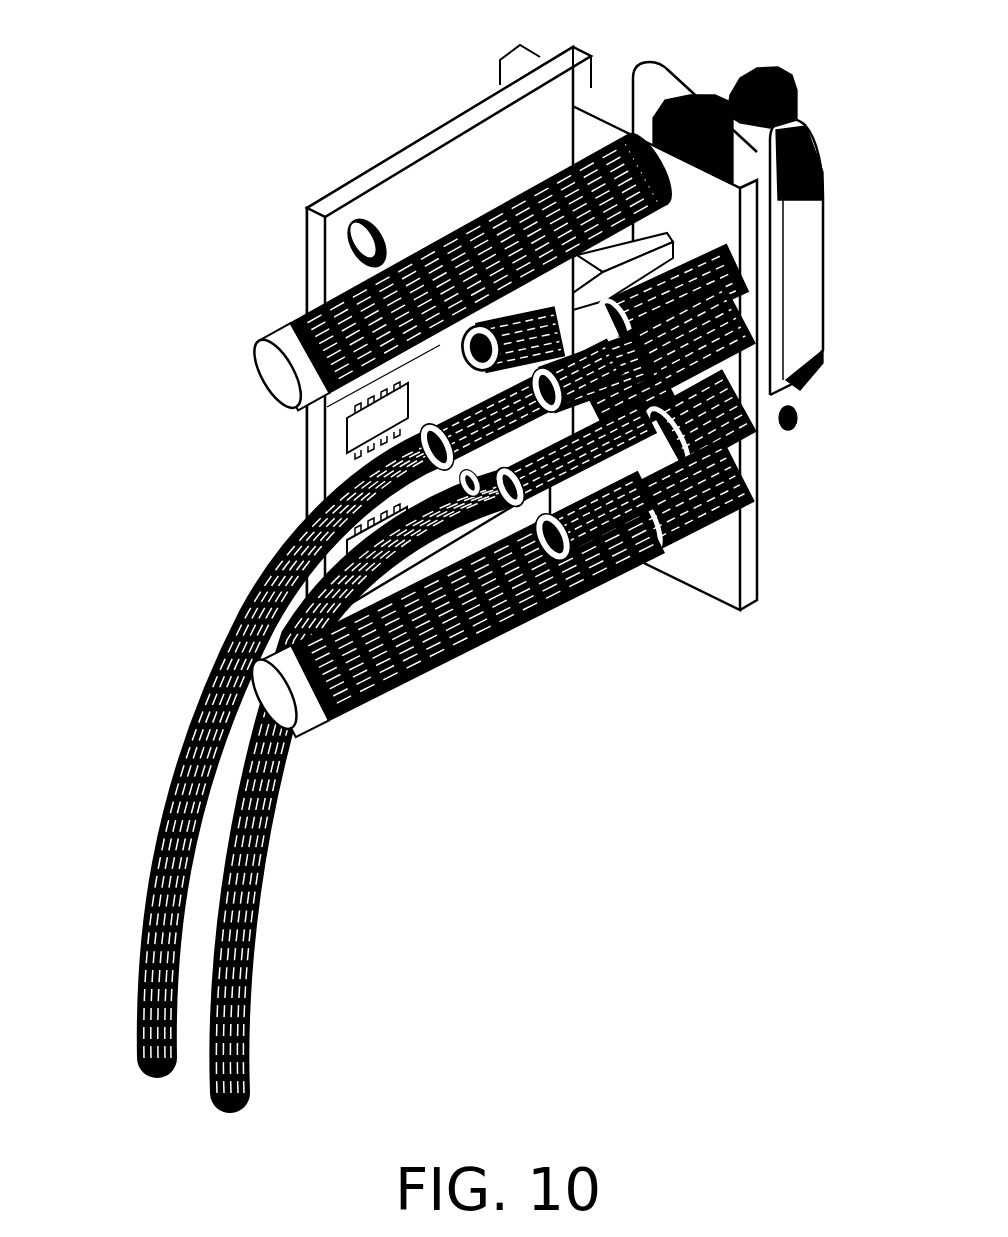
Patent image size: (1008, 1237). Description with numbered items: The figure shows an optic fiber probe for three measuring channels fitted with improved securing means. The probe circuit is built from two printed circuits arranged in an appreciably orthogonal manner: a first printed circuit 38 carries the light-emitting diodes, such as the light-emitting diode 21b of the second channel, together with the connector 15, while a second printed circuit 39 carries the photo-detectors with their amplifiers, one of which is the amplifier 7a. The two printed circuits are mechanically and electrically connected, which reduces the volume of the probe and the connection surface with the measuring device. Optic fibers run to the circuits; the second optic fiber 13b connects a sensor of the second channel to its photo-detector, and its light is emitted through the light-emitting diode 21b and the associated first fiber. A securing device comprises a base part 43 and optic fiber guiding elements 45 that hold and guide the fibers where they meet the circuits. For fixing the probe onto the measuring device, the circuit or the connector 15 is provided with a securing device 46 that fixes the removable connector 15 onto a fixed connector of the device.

The first printed circuit 38 is at (594, 97).
The second printed circuit 39 is at (416, 150).
The securing device 46 is at (320, 318).
The amplifier 7a is at (347, 421).
The optic fiber guiding element 45 is at (497, 495).
The base part 43 is at (760, 530).
The connector 15 is at (810, 291).
The second optic fiber 13b is at (157, 815).
The light-emitting diode 21b is at (265, 858).